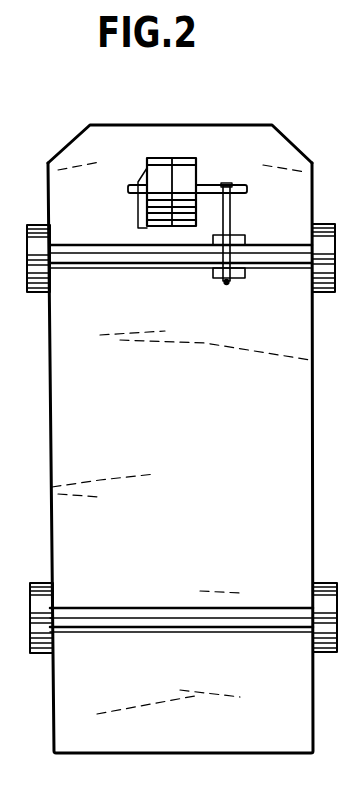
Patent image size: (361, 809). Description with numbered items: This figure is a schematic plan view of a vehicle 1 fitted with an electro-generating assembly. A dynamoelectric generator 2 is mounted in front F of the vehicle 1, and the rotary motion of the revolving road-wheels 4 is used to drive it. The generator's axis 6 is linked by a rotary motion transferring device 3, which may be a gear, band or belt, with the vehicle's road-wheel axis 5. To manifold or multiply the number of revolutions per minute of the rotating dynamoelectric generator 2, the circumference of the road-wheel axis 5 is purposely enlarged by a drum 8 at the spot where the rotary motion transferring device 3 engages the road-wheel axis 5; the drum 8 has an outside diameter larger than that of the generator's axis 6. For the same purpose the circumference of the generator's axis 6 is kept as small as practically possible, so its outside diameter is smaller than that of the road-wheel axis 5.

The vehicle 1 is at (196, 428).
The dynamoelectric generator 2 is at (162, 158).
The rotary motion transferring device 3 is at (232, 216).
The road-wheels 4 is at (38, 292).
The road-wheel axis 5 is at (93, 245).
The generator's axis 6 is at (212, 184).
The drum 8 is at (244, 278).
The front F is at (105, 124).